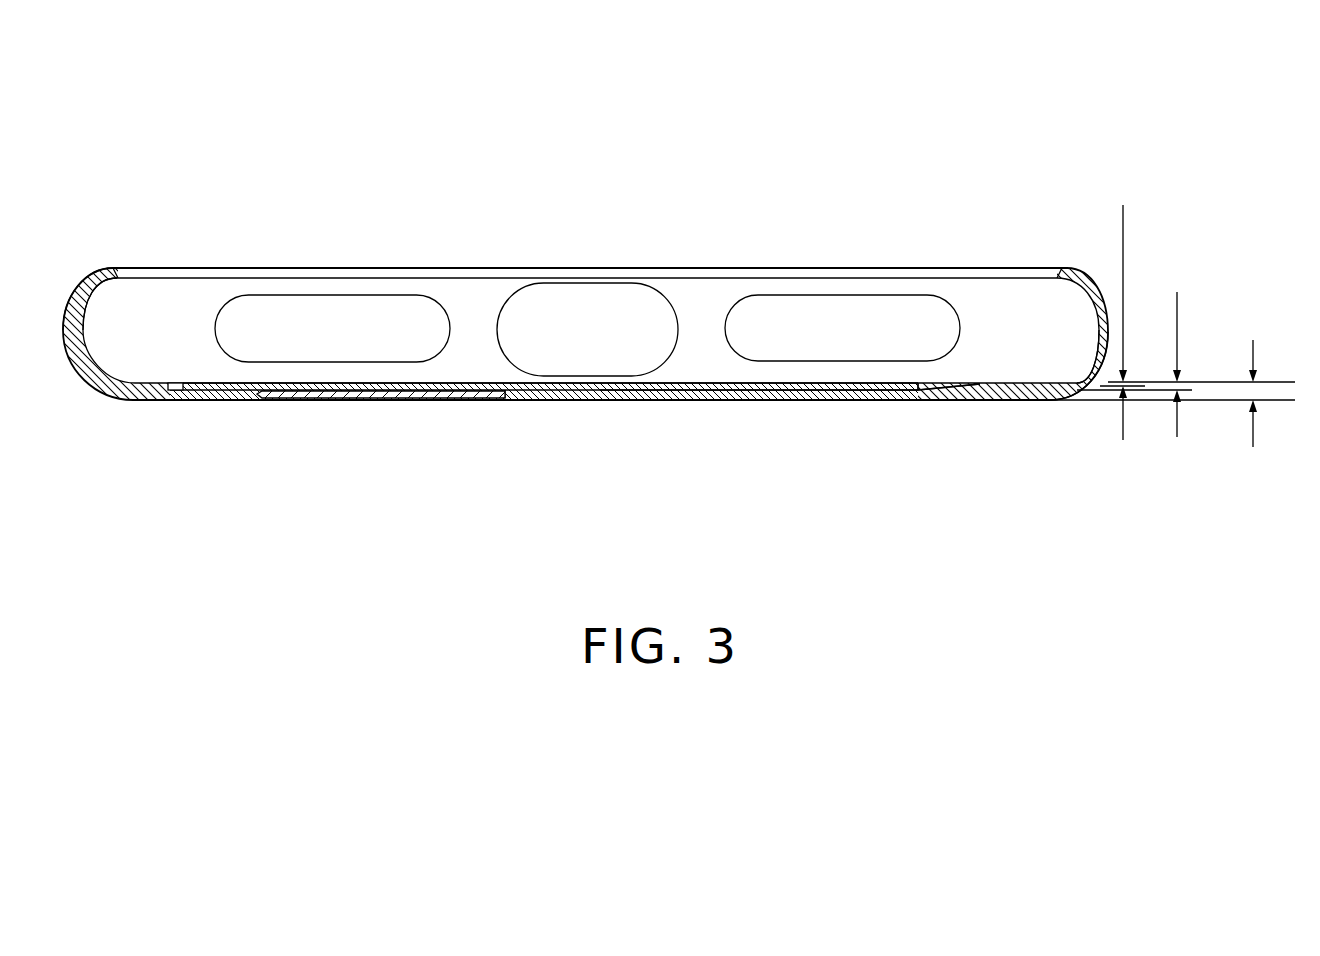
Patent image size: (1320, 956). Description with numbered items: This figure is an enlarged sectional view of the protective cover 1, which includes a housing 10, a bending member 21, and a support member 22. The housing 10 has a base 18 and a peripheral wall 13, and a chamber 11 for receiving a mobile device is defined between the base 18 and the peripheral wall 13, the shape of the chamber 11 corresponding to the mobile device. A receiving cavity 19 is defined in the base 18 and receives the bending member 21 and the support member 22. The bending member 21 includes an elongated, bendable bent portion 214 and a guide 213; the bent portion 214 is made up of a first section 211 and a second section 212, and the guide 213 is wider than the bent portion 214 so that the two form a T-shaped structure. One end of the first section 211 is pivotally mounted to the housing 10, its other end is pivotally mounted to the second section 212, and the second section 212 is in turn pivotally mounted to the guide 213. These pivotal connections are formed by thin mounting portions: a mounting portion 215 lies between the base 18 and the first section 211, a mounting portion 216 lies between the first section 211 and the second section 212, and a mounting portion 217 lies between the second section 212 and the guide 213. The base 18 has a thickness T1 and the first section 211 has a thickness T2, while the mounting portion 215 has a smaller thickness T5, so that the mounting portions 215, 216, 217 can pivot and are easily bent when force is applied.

The protective cover 1 is at (596, 59).
The housing 10 is at (652, 252).
The chamber 11 is at (462, 310).
The peripheral wall 13 is at (79, 286).
The base 18 is at (1015, 400).
The receiving cavity 19 is at (171, 372).
The bending member 21 is at (605, 282).
The first section 211 is at (803, 385).
The second section 212 is at (382, 388).
The guide 213 is at (193, 388).
The bent portion 214 is at (670, 370).
The mounting portion 215 is at (917, 385).
The mounting portion 216 is at (510, 385).
The mounting portion 217 is at (257, 394).
The support member 22 is at (693, 400).
The thickness of the base T1 is at (1172, 376).
The thickness of the first section T2 is at (1173, 347).
The thickness of the mounting portion T5 is at (1180, 307).